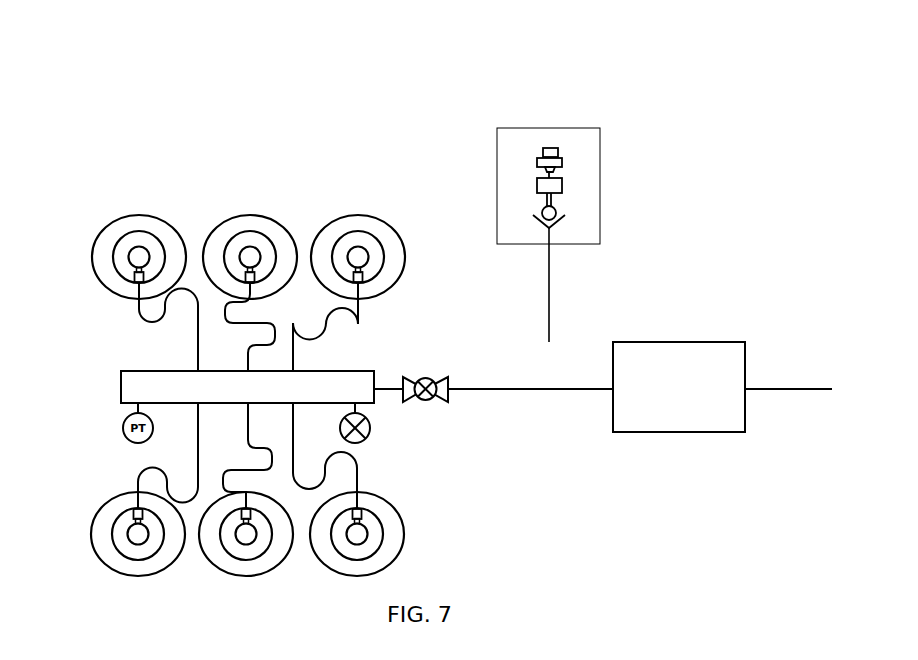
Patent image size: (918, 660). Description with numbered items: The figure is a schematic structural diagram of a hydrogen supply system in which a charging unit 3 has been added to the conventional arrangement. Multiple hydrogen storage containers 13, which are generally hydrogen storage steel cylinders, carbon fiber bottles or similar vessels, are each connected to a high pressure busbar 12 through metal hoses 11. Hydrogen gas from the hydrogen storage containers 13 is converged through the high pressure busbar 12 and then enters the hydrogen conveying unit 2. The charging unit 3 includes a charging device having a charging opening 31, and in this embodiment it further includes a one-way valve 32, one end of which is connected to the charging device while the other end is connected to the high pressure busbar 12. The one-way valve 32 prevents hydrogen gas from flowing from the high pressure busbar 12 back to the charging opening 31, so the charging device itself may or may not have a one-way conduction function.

The hydrogen conveying unit 2 is at (678, 432).
The charging unit 3 is at (564, 215).
The metal hose 11 is at (357, 473).
The high pressure busbar 12 is at (130, 388).
The hydrogen storage container 13 is at (384, 220).
The charging opening 31 is at (543, 147).
The one-way valve 32 is at (555, 207).